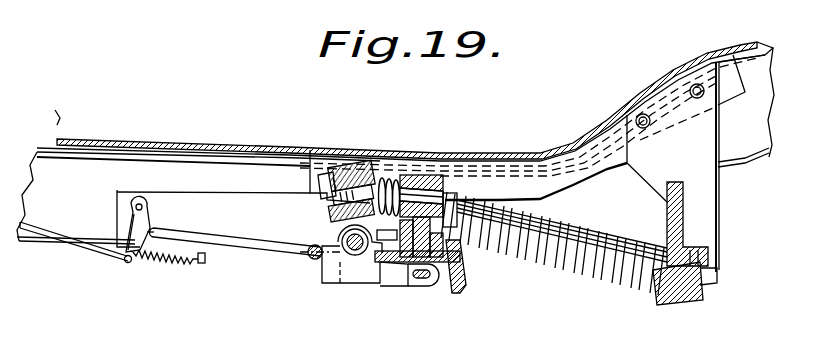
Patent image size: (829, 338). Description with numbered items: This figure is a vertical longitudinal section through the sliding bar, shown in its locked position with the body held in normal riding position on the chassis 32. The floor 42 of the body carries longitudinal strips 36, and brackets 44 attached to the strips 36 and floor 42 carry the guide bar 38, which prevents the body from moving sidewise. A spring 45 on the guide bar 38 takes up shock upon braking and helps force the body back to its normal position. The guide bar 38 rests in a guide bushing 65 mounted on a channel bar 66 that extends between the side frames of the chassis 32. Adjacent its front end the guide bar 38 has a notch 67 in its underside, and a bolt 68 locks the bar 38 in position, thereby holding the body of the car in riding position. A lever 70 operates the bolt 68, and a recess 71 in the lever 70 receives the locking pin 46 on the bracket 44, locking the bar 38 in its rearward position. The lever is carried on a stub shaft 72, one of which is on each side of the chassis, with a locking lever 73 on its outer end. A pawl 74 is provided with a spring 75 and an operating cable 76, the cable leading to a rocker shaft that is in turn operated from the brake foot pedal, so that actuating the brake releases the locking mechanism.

The chassis 32 is at (193, 198).
The longitudinal strip 36 is at (578, 172).
The guide bar 38 is at (598, 270).
The floor 42 is at (198, 131).
The bracket 44 is at (333, 183).
The spring 45 is at (384, 180).
The locking pin 46 is at (309, 258).
The guide bushing 65 is at (406, 185).
The channel bar 66 is at (461, 290).
The notch 67 is at (429, 216).
The bolt 68 is at (464, 268).
The lever 70 is at (404, 280).
The recess 71 is at (304, 243).
The stub shaft 72 is at (358, 254).
The locking lever 73 is at (153, 226).
The pawl 74 is at (133, 218).
The spring 75 is at (146, 260).
The operating cable 76 is at (43, 238).